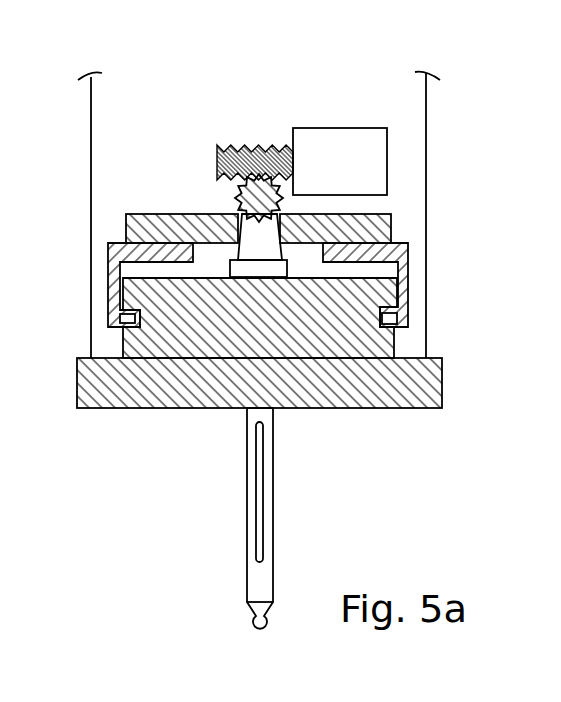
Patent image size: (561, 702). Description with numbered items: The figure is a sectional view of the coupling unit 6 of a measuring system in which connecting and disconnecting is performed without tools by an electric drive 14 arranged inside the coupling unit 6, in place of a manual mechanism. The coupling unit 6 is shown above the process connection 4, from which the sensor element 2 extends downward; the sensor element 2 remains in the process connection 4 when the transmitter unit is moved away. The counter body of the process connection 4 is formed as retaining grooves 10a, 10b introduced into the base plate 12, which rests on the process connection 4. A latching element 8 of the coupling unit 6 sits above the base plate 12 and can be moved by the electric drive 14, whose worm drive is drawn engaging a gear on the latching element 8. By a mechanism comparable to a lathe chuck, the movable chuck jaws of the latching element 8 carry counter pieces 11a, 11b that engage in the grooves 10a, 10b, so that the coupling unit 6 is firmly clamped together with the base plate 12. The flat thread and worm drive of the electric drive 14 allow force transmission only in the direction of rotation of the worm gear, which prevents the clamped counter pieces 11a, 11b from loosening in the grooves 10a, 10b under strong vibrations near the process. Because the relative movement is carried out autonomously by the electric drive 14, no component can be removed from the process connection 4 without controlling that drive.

The sensor element 2 is at (260, 500).
The process connection 4 is at (387, 397).
The coupling unit 6 is at (427, 163).
The latching element 8 is at (181, 208).
The retaining groove 10a is at (117, 332).
The retaining groove 10b is at (397, 330).
The counter piece 11a is at (130, 319).
The counter piece 11b is at (388, 318).
The base plate 12 is at (197, 337).
The electric drive 14 is at (250, 137).